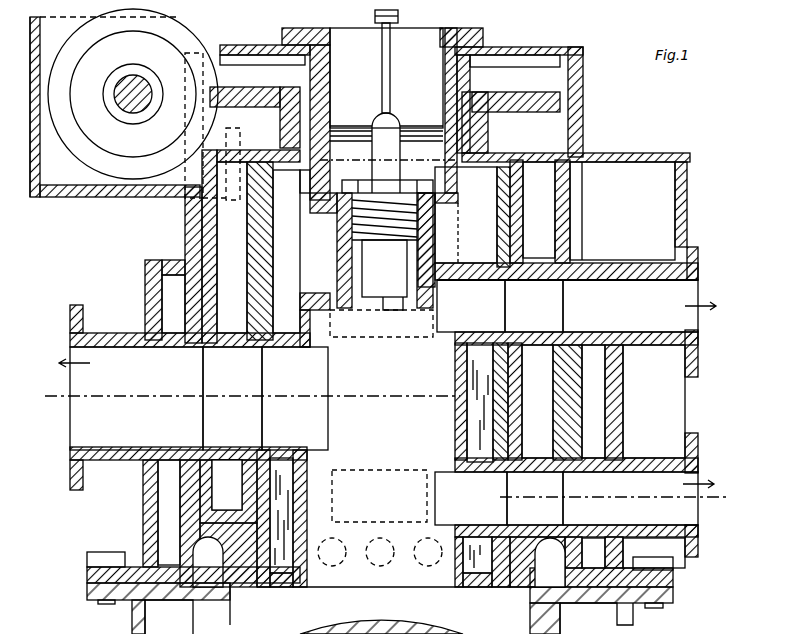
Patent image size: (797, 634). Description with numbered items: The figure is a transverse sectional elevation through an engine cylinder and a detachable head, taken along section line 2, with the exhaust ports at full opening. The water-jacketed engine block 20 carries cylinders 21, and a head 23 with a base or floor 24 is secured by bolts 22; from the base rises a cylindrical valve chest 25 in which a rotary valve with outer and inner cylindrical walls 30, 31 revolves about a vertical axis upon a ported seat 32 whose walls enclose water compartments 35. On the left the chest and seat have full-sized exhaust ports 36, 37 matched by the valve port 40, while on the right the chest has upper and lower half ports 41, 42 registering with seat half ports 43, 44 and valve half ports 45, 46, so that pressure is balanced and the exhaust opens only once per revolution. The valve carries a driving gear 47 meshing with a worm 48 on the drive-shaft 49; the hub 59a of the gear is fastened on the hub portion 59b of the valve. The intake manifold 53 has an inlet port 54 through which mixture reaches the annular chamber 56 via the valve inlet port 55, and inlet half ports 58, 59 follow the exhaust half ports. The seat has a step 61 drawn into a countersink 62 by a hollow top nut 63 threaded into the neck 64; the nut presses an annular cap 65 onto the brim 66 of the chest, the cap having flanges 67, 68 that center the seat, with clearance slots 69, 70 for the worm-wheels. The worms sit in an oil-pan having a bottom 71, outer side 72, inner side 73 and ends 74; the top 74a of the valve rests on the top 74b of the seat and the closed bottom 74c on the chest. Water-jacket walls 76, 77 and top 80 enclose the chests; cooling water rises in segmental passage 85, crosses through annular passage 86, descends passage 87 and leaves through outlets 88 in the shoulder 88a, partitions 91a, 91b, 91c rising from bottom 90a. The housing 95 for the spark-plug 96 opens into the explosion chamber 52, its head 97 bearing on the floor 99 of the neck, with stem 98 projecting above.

The section line 2 is at (390, 447).
The engine block 20 is at (132, 625).
The cylinders 21 is at (232, 618).
The bolts 22 is at (104, 553).
The head 23 is at (166, 245).
The base or floor 24 is at (179, 523).
The valve chest 25 is at (583, 93).
The outer cylindrical wall 30 is at (222, 238).
The inner cylindrical wall 31 is at (523, 228).
The seat 32 is at (275, 588).
The water compartments or spaces 35 is at (497, 225).
The exhaust port 36 is at (131, 398).
The exhaust port 37 is at (295, 398).
The port 40 is at (232, 398).
The upper half port 41 is at (639, 306).
The lower half port 42 is at (638, 498).
The half port 43 is at (471, 306).
The half port 44 is at (471, 498).
The upper half port 45 is at (534, 306).
The lower half port 46 is at (535, 498).
The driving gear 47 is at (545, 112).
The worm 48 is at (133, 94).
The drive-shaft 49 is at (114, 93).
The explosion chamber 52 is at (433, 590).
The intake manifold 53 is at (687, 205).
The inlet port 54 is at (582, 200).
The inlet port 55 is at (459, 248).
The annular chamber 56 is at (391, 335).
The upper inlet half port 58 is at (420, 326).
The lower inlet half port 59 is at (379, 488).
The hub of the gear 59a is at (488, 143).
The hub portion 59b is at (310, 80).
The head, shoulder or step 61 is at (520, 562).
The countersink 62 is at (235, 565).
The hollow bolt-headed top nut 63 is at (450, 30).
The nipple or neck 64 is at (452, 150).
The annular cap 65 is at (521, 48).
The brim 66 is at (578, 47).
The annular flange 67 is at (561, 67).
The central flange 68 is at (473, 67).
The clearance slots 69 is at (222, 46).
The clearance slots 70 is at (195, 176).
The bottom 71 is at (100, 197).
The outer side 72 is at (30, 137).
The inner side 73 is at (240, 140).
The ends 74 is at (105, 107).
The top of the valve 74a is at (546, 153).
The top of the seat 74b is at (298, 176).
The closed bottom of the valve 74c is at (565, 516).
The wall 76 is at (623, 387).
The wall 77 is at (143, 513).
The top 80 is at (172, 278).
The segmental passage 85 is at (305, 251).
The annular passage 86 is at (322, 290).
The segmental passage 87 is at (293, 500).
The outlets 88 is at (392, 546).
The shoulder portion 88a is at (240, 545).
The bottom 90a is at (468, 590).
The vertical partition 91a is at (287, 477).
The vertical partition 91b is at (465, 545).
The vertical partition 91c is at (470, 360).
The housing 95 is at (440, 230).
The spark-plug 96 is at (385, 251).
The head of the spark-plug 97 is at (387, 188).
The stem 98 is at (382, 43).
The bottom or floor 99 is at (433, 190).